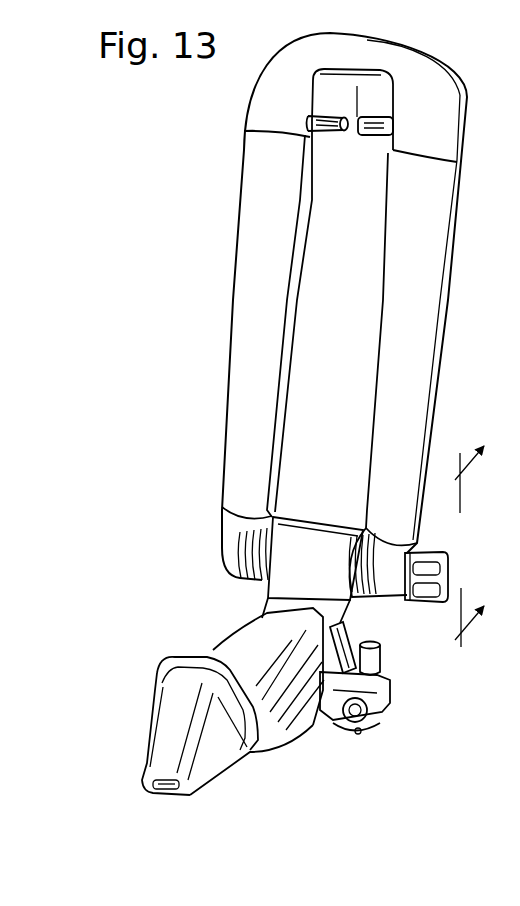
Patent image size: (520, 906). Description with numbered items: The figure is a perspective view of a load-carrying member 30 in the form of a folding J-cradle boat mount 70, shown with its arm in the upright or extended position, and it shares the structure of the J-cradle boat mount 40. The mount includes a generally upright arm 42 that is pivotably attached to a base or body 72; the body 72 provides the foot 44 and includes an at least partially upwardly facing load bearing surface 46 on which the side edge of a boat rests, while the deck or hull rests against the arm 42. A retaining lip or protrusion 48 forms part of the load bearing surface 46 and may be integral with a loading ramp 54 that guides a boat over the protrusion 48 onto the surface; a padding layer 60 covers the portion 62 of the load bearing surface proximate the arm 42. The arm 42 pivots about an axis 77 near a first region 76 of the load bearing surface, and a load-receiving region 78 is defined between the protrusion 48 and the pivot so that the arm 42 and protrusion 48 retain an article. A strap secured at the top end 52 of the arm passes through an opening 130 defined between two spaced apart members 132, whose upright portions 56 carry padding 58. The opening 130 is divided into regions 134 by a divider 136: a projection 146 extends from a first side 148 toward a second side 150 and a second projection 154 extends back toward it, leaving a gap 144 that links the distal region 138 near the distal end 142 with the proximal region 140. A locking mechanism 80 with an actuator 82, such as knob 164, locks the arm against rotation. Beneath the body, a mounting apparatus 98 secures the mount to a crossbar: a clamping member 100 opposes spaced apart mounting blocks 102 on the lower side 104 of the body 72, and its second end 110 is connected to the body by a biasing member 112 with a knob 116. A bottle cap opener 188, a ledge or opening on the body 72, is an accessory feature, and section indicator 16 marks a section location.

The load-carrying member 30 is at (80, 162).
The J-cradle boat mount 40 is at (95, 207).
The arm 42 is at (345, 290).
The foot 44 is at (203, 709).
The load bearing surface 46 is at (277, 657).
The protrusion 48 is at (163, 650).
The top end 52 is at (377, 81).
The loading ramp 54 is at (141, 736).
The upright portions 56 is at (377, 352).
The padding 58 is at (367, 447).
The padding layer 60 is at (179, 668).
The portion of the load bearing surface 62 is at (282, 643).
The folding J-cradle boat mount 70 is at (148, 230).
The body 72 is at (217, 760).
The first region 76 is at (278, 624).
The axis 77 is at (212, 543).
The load-receiving region 78 is at (164, 651).
The locking mechanism 80 is at (384, 608).
The actuator 82 is at (458, 564).
The mounting apparatus 98 is at (405, 730).
The clamping member 100 is at (380, 722).
The mounting blocks 102 is at (290, 753).
The lower side 104 is at (217, 803).
The second end 110 is at (364, 740).
The biasing member 112 is at (394, 705).
The knob 116 is at (383, 663).
The opening 130 is at (301, 324).
The spaced apart members 132 is at (250, 197).
The regions 134 is at (318, 96).
The divider 136 is at (407, 109).
The distal region 138 is at (376, 93).
The proximal region 140 is at (338, 481).
The distal end 142 is at (336, 26).
The gap 144 is at (356, 110).
The projection 146 is at (340, 151).
The first side 148 is at (295, 373).
The second side 150 is at (375, 373).
The second projection 154 is at (368, 125).
The knob 164 is at (447, 574).
The bottle cap opener 188 is at (160, 756).
The section line 16 is at (486, 540).